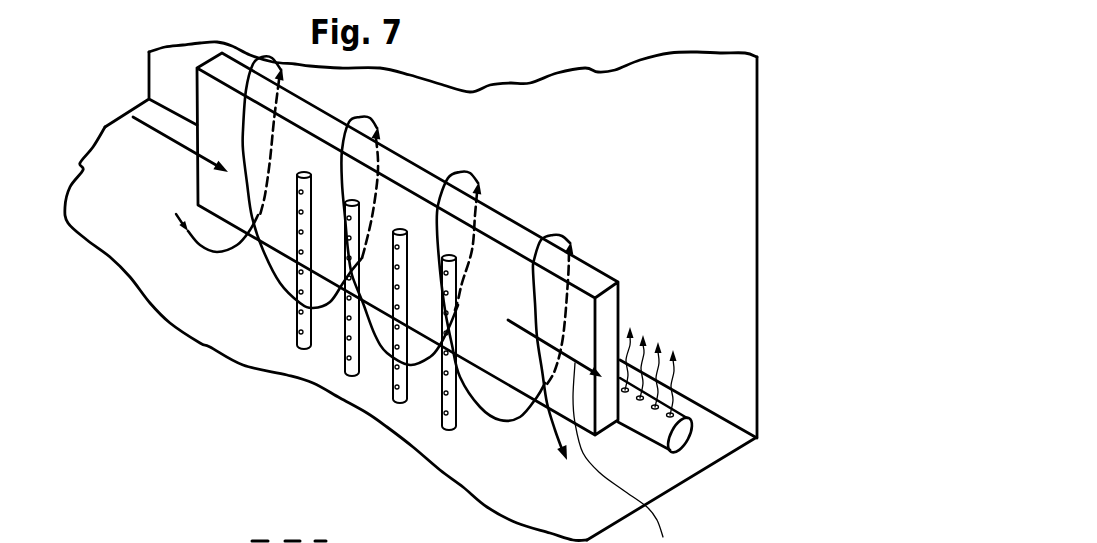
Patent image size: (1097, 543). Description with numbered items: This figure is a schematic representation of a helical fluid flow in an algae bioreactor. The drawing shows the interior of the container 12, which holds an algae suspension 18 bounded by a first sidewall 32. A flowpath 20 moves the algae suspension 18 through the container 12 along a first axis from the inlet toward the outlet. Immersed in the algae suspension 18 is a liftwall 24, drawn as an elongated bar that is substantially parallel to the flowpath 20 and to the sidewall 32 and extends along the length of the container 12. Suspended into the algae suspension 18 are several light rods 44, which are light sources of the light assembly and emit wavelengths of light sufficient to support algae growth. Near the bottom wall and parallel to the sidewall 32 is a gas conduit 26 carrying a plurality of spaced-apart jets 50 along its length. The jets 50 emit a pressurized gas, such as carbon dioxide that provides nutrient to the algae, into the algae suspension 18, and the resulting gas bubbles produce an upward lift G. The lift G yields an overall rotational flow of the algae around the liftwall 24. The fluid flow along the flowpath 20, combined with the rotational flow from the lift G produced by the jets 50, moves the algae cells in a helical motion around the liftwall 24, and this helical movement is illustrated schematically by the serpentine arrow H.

The container 12 is at (778, 117).
The algae suspension 18 is at (232, 335).
The flowpath 20 is at (150, 132).
The liftwall 24 is at (620, 307).
The gas conduit 26 is at (660, 447).
The first sidewall 32 is at (757, 202).
The light rods 44 is at (352, 373).
The jets 50 is at (670, 417).
The lift G is at (628, 348).
The serpentine arrow H is at (210, 250).